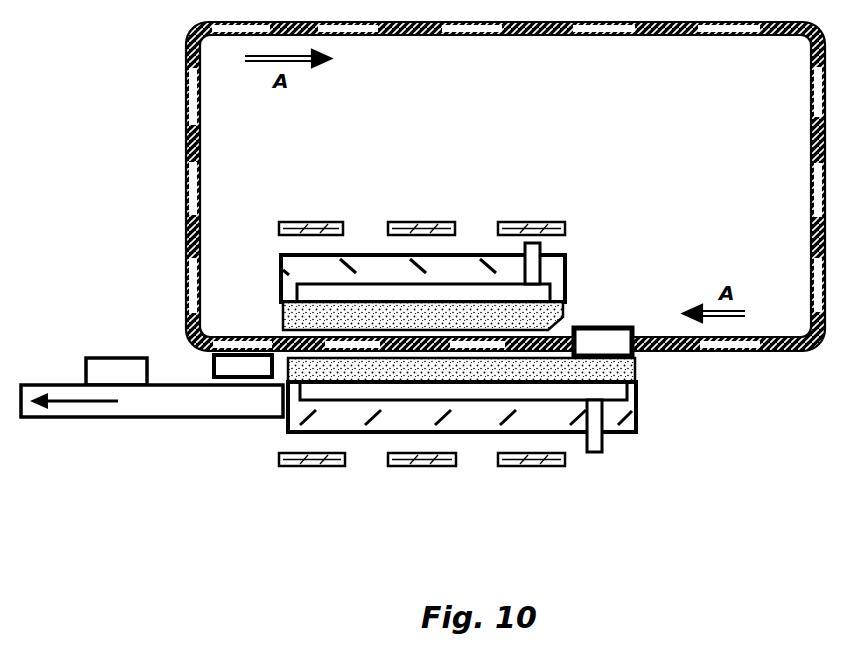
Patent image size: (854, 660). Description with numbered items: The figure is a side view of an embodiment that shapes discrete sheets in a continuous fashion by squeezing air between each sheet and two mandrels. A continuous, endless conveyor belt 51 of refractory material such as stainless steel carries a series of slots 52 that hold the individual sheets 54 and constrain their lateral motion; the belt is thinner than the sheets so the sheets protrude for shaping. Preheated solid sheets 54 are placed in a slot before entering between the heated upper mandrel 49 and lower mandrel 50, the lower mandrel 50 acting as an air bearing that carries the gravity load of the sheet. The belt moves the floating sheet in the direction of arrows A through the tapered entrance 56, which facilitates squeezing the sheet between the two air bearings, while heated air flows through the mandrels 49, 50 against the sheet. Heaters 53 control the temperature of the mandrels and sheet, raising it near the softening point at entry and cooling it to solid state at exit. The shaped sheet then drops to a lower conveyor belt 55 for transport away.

The upper mandrel 49 is at (291, 322).
The lower mandrel 50 is at (630, 373).
The conveyor belt 51 is at (666, 36).
The slots 52 is at (743, 356).
The heaters 53 is at (437, 194).
The sheets 54 is at (606, 326).
The conveyor belt 55 is at (205, 419).
The tapered entrance 56 is at (568, 321).